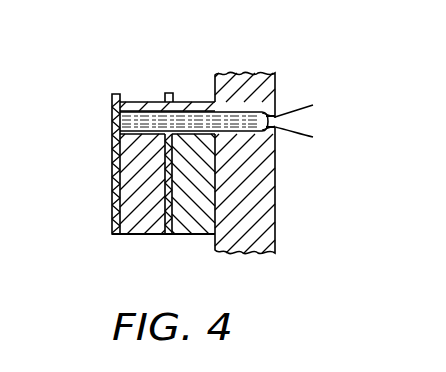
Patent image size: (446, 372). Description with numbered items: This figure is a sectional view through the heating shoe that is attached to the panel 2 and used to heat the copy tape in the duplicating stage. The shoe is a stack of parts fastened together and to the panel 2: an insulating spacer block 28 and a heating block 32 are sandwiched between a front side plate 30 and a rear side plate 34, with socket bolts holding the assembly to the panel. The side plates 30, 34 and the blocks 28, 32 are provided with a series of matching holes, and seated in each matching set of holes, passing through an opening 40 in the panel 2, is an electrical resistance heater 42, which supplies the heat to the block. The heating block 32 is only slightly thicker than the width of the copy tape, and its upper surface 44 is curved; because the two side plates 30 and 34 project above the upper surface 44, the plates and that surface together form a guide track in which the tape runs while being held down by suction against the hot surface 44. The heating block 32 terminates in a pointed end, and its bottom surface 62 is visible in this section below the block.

The panel 2 is at (257, 258).
The insulating spacer block 28 is at (198, 217).
The front side plate 30 is at (114, 96).
The heating block 32 is at (135, 183).
The rear side plate 34 is at (172, 100).
The opening 40 is at (264, 131).
The electrical resistance heater 42 is at (240, 120).
The upper surface 44 is at (140, 102).
The bottom surface 62 is at (131, 236).